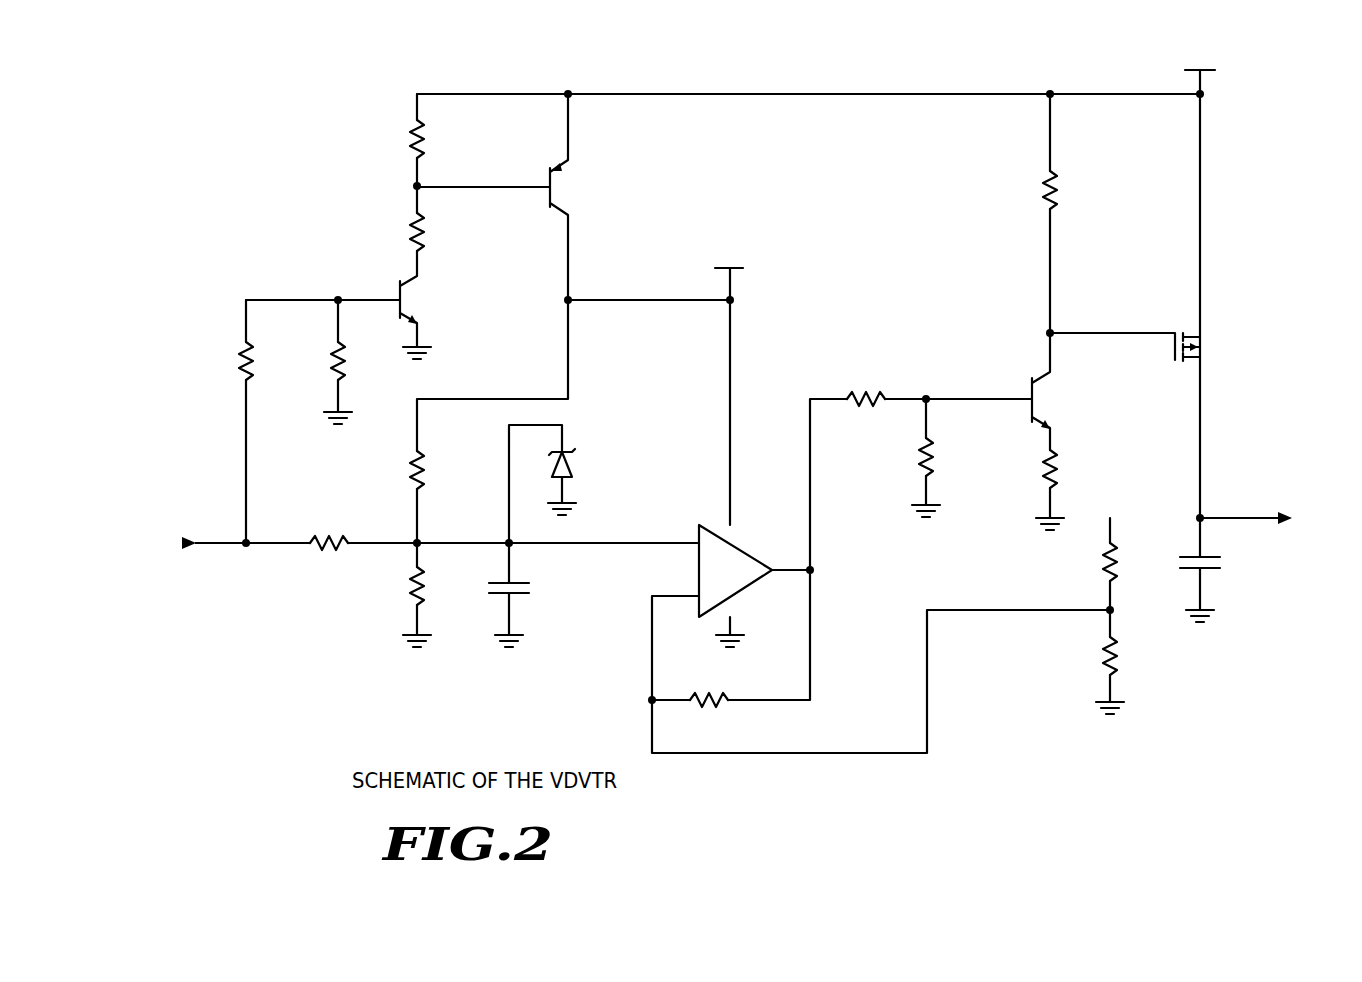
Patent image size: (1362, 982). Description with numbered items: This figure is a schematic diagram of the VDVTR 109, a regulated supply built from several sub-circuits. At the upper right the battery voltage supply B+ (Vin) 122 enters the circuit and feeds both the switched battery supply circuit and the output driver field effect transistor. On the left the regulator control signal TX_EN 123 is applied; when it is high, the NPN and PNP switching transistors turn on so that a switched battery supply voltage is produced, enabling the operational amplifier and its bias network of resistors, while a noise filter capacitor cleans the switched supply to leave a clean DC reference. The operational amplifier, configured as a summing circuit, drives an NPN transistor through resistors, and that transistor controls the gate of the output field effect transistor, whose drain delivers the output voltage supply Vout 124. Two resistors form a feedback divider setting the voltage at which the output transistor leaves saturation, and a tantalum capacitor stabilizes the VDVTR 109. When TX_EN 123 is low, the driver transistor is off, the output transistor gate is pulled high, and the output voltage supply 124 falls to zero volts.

The VDVTR 109 is at (684, 820).
The battery voltage input B+ (Vin) 122 is at (1097, 92).
The transmit enable input TX_EN 123 is at (215, 546).
The output voltage supply 124 is at (1243, 515).